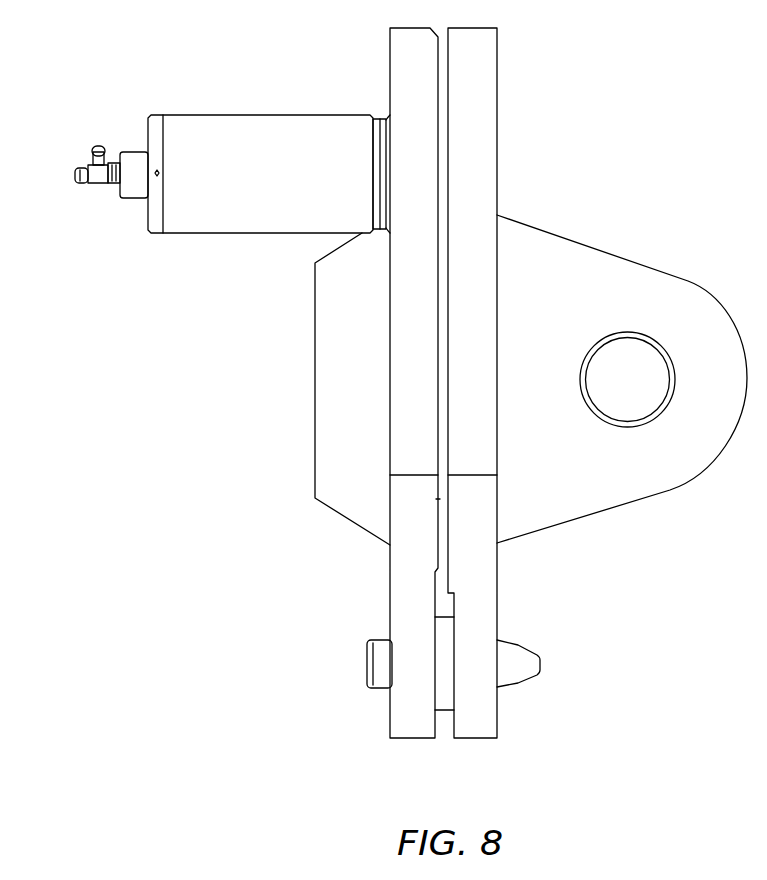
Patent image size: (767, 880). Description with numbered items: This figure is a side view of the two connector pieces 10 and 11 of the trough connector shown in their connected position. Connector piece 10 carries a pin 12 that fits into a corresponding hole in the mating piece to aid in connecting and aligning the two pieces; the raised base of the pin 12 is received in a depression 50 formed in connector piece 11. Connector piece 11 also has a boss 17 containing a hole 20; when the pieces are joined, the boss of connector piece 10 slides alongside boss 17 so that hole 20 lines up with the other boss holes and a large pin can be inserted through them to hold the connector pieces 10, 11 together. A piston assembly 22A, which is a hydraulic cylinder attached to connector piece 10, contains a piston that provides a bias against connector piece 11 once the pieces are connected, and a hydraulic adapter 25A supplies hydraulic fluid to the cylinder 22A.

The connector piece 10 is at (425, 339).
The connector piece 11 is at (484, 339).
The pin 12 is at (518, 643).
The boss 17 is at (569, 305).
The hole 20 is at (640, 389).
The piston assembly 22A is at (272, 181).
The hydraulic adapter 25A is at (84, 170).
The depression 50 is at (453, 740).